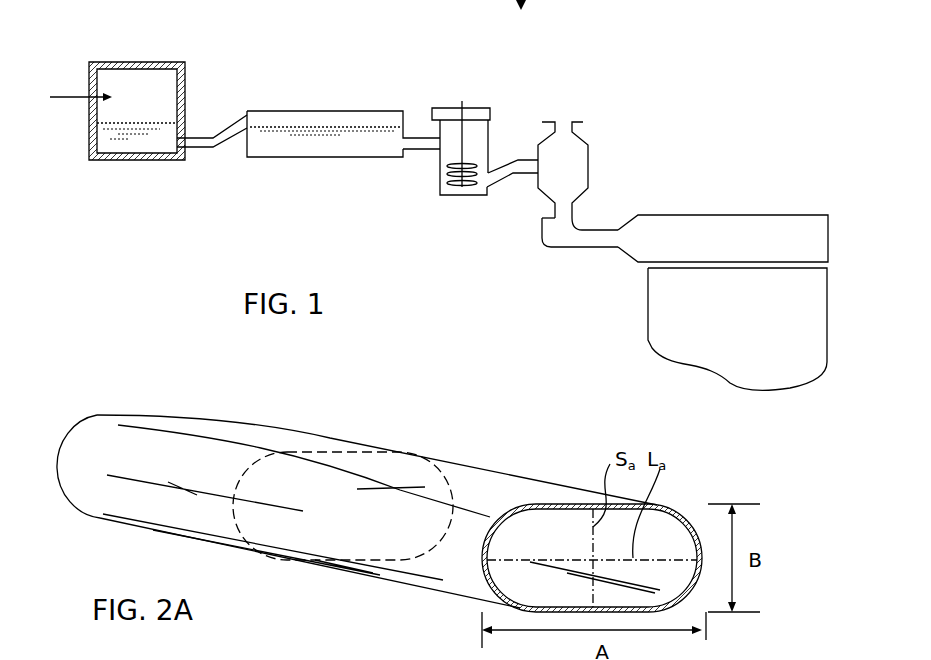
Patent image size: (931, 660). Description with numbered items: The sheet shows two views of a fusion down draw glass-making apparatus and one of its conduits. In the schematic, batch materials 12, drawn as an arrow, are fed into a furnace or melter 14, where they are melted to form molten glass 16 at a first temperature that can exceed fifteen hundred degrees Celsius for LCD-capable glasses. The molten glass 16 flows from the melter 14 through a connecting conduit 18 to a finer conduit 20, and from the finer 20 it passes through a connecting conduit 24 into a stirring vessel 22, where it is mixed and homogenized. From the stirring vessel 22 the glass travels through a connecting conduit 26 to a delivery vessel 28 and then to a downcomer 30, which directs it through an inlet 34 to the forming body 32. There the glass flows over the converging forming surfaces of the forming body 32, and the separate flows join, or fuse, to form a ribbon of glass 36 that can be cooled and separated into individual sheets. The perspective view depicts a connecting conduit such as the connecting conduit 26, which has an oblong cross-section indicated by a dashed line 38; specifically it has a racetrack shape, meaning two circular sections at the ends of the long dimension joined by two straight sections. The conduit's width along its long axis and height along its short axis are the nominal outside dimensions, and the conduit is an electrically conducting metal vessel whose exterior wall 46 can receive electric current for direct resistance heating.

In FIG. 1, the batch materials 12 is at (76, 97).
In FIG. 1, the melter 14 is at (130, 62).
In FIG. 1, the molten glass 16 is at (113, 148).
In FIG. 1, the connecting conduit 18 is at (200, 149).
In FIG. 1, the finer conduit 20 is at (312, 111).
In FIG. 1, the stirring vessel 22 is at (437, 163).
In FIG. 1, the connecting conduit 24 is at (415, 138).
In FIG. 1, the connecting conduit 26 is at (520, 160).
In FIG. 2A, the connecting conduit 26 is at (357, 600).
In FIG. 1, the delivery vessel 28 is at (590, 152).
In FIG. 1, the downcomer 30 is at (555, 212).
In FIG. 1, the forming body 32 is at (795, 215).
In FIG. 1, the inlet 34 is at (580, 247).
In FIG. 1, the ribbon of glass 36 is at (645, 330).
In FIG. 2A, the dashed line 38 is at (340, 452).
In FIG. 2A, the exterior wall 46 is at (500, 467).